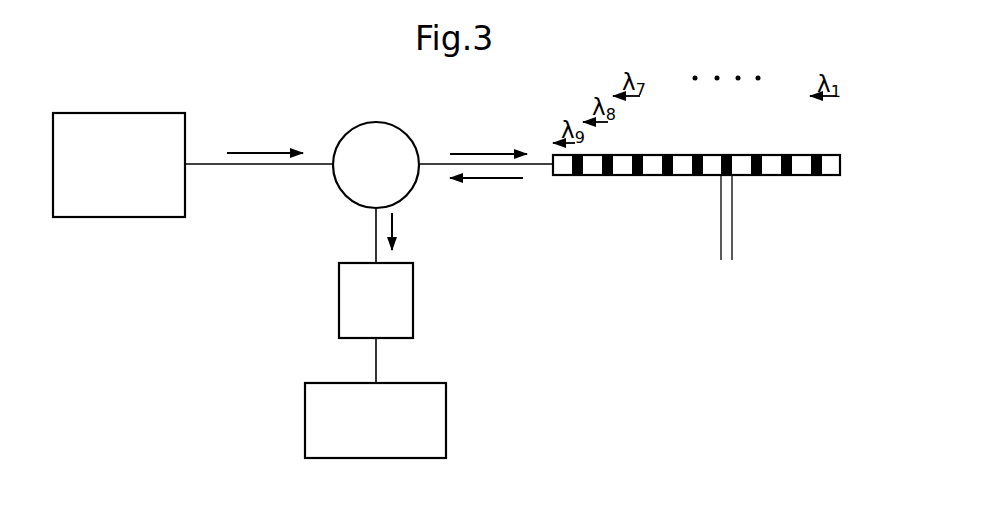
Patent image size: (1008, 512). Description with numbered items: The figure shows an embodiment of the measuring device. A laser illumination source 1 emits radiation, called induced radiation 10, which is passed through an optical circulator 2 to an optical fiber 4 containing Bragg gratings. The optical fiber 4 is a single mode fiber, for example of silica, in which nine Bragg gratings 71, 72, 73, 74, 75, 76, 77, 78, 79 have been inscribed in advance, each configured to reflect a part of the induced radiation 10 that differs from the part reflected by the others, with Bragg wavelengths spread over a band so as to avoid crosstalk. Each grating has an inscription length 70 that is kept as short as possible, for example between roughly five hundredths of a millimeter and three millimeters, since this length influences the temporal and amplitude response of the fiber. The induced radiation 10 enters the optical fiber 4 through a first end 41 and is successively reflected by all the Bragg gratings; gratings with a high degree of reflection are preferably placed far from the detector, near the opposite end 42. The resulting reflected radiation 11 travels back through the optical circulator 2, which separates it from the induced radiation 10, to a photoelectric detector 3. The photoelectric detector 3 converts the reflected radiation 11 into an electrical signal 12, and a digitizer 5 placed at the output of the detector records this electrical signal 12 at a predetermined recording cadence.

The laser illumination source 1 is at (111, 176).
The optical circulator 2 is at (368, 177).
The photoelectric detector 3 is at (368, 312).
The optical fiber 4 is at (684, 211).
The digitizer 5 is at (368, 434).
The induced radiation 10 is at (377, 140).
The reflected radiation 11 is at (457, 214).
The electrical signal 12 is at (376, 362).
The first end of the optical fiber 41 is at (548, 157).
The end of the optical fiber 42 is at (843, 163).
The inscription length 70 is at (758, 253).
The Bragg grating 71 is at (813, 175).
The Bragg grating 72 is at (785, 175).
The Bragg grating 73 is at (753, 155).
The Bragg grating 74 is at (727, 155).
The Bragg grating 75 is at (697, 155).
The Bragg grating 76 is at (667, 155).
The Bragg grating 77 is at (635, 175).
The Bragg grating 78 is at (607, 175).
The Bragg grating 79 is at (578, 175).